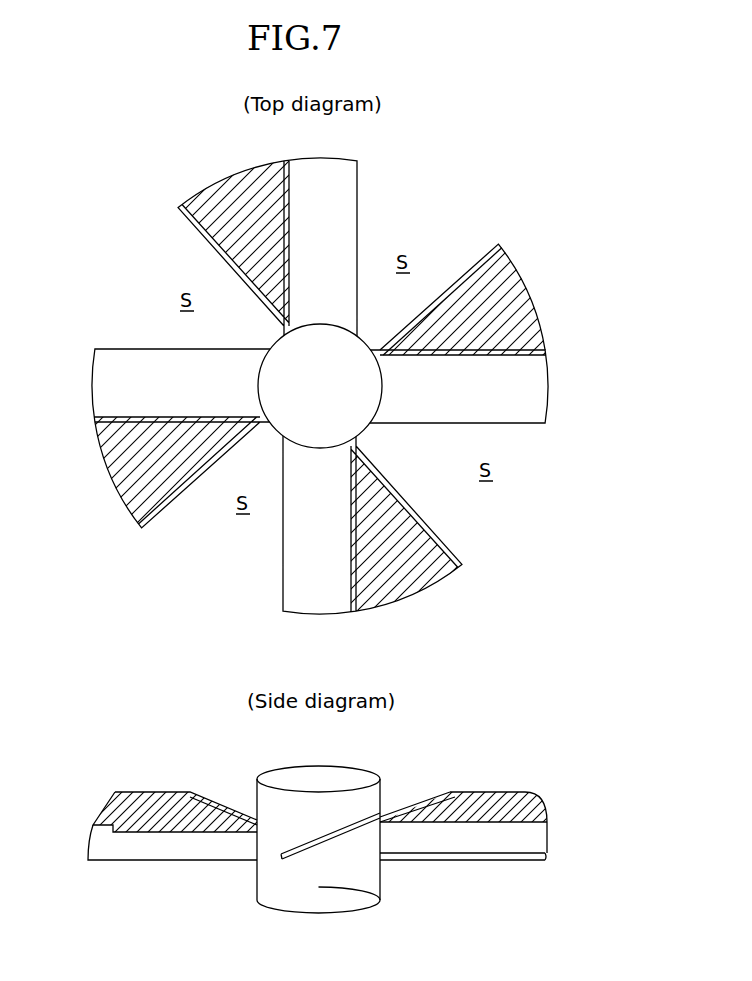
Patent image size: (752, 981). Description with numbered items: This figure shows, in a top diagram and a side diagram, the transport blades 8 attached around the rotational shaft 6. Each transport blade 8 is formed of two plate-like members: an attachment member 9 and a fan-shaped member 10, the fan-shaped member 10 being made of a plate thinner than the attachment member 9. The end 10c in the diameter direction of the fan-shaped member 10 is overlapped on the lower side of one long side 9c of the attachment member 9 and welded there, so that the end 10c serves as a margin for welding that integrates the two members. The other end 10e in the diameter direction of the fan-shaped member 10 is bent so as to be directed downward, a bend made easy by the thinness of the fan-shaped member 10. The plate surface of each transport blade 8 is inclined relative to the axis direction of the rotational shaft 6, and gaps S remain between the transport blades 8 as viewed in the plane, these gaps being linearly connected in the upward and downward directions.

The rotational shaft 6 is at (345, 422).
The transport blade 8 is at (328, 505).
The attachment member 9 is at (522, 390).
The fan-shaped member 10 is at (508, 298).
The end in the diameter direction 10e is at (442, 287).
The long side 9c is at (322, 837).
The end in the diameter direction 10c is at (353, 831).